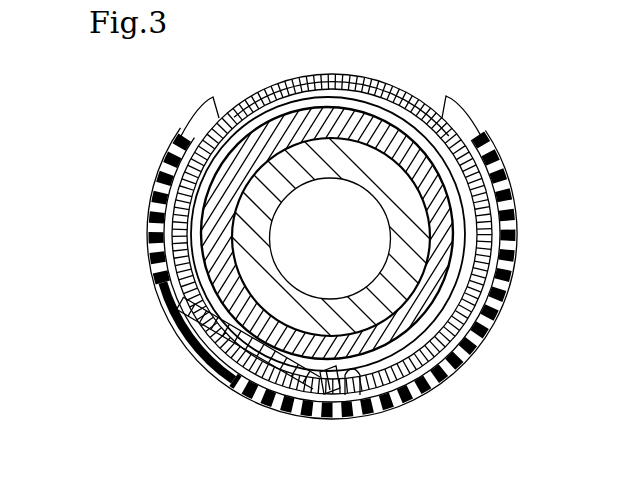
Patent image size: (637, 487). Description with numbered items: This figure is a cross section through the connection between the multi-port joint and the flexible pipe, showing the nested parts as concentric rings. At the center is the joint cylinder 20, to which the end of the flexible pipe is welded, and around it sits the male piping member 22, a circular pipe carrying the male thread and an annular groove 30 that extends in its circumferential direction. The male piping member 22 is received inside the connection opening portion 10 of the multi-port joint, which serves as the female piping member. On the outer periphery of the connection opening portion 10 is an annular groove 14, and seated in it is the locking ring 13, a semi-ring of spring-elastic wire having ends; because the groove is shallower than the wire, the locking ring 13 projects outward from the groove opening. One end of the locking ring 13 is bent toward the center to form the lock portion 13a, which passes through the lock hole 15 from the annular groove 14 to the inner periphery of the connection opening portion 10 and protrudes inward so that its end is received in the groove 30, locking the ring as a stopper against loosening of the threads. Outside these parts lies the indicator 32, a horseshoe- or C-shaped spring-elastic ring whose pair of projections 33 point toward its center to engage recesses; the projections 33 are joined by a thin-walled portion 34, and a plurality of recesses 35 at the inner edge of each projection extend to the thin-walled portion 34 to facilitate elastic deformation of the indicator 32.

The connection opening portion 10 is at (443, 133).
The locking ring 13 is at (395, 88).
The lock portion 13a is at (368, 393).
The annular groove 14 is at (393, 390).
The lock hole 15 is at (323, 373).
The joint cylinder 20 is at (440, 283).
The male piping member 22 is at (452, 242).
The groove 30 is at (383, 360).
The indicator 32 is at (148, 258).
The projections 33 is at (200, 108).
The thin-walled portion 34 is at (150, 283).
The recesses 35 is at (320, 407).